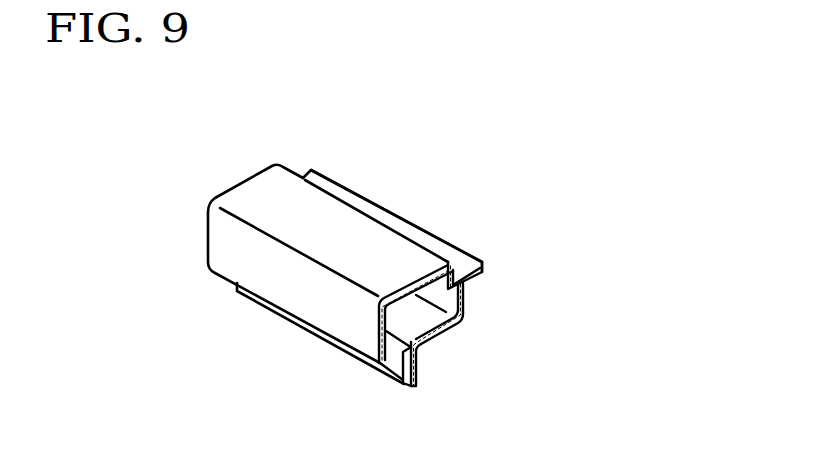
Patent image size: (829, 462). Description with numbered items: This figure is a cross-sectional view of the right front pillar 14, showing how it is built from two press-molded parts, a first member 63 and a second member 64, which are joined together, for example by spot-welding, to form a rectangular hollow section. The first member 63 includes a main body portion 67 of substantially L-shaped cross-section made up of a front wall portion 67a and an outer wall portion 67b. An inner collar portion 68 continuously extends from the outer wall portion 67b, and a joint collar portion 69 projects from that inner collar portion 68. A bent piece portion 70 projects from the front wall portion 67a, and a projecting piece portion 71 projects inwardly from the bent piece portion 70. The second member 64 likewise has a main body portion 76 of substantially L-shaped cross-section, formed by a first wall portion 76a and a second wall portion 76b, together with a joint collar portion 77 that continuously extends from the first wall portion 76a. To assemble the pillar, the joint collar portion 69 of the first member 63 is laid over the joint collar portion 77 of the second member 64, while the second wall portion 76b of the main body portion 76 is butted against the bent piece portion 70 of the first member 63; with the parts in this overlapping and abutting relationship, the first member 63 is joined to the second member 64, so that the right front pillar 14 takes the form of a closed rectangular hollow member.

The right front pillar 14 is at (462, 150).
The first member 63 is at (343, 247).
The second member 64 is at (466, 349).
The main body portion 67 is at (333, 239).
The front wall portion 67a is at (318, 208).
The outer wall portion 67b is at (268, 270).
The inner collar portion 68 is at (402, 380).
The joint collar portion 69 is at (307, 327).
The bent piece portion 70 is at (462, 260).
The projecting piece portion 71 is at (393, 220).
The main body portion 76 is at (480, 349).
The first wall portion 76a is at (436, 334).
The second wall portion 76b is at (464, 300).
The joint collar portion 77 is at (420, 373).